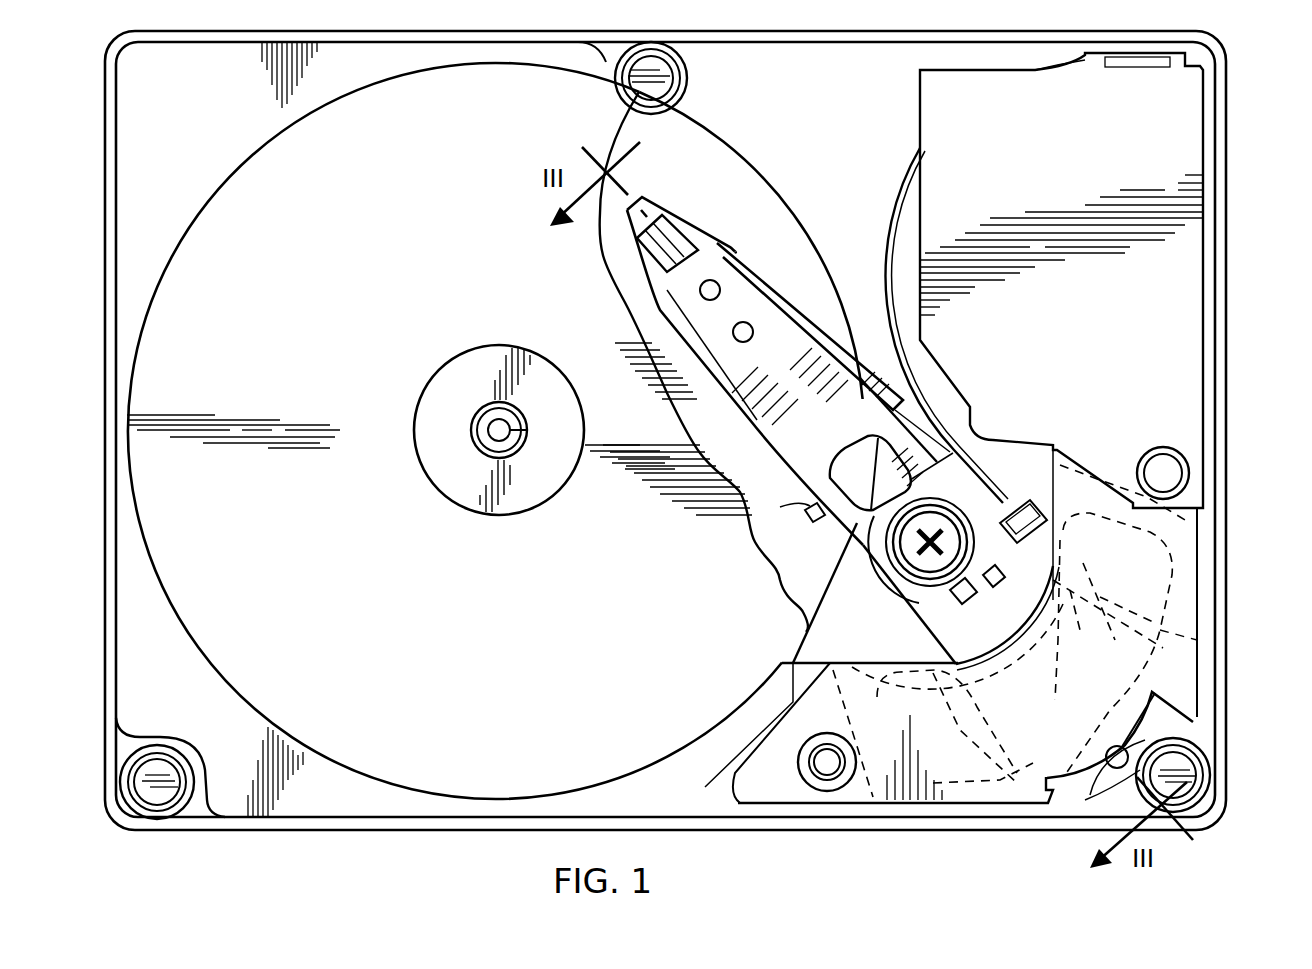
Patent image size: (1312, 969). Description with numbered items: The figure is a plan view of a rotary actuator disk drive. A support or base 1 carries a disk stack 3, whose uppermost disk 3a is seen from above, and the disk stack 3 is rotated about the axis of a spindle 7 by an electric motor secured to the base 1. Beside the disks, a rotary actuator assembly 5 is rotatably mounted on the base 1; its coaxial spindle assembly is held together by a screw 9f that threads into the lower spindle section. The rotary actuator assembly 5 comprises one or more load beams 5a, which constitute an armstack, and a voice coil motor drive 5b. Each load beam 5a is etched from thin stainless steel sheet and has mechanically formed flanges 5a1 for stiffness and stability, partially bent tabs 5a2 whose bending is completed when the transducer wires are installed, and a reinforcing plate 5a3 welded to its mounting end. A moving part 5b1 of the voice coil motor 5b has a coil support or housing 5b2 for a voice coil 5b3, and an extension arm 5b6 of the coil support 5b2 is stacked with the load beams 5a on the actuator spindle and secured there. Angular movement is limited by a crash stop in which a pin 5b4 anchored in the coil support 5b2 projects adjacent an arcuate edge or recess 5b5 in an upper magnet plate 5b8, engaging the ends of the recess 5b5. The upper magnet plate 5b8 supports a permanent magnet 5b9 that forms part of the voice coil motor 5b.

The base 1 is at (852, 836).
The disk stack 3 is at (264, 128).
The disk recording surface 3a is at (688, 101).
The rotary actuator assembly 5 is at (824, 527).
The load beam 5a is at (745, 255).
The flanges 5a1 is at (783, 294).
The tabs 5a2 is at (810, 506).
The reinforcing plate 5a3 is at (962, 489).
The voice coil motor drive 5b is at (1136, 624).
The moving part 5b1 is at (1115, 594).
The coil support or housing 5b2 is at (1108, 591).
The voice coil 5b3 is at (1218, 622).
The pin 5b4 is at (1178, 742).
The arcuate edge or recess 5b5 is at (1150, 725).
The extension arm 5b6 is at (1044, 536).
The upper magnet plate 5b8 is at (1185, 666).
The permanent magnet 5b9 is at (1218, 586).
The spindle 7 is at (476, 449).
The screw 9f is at (915, 562).